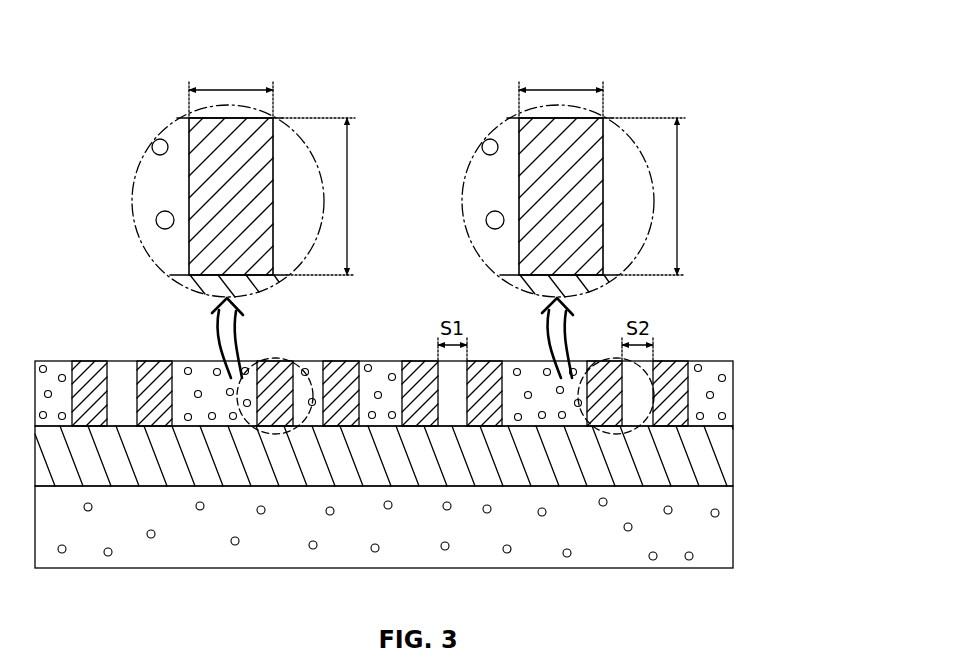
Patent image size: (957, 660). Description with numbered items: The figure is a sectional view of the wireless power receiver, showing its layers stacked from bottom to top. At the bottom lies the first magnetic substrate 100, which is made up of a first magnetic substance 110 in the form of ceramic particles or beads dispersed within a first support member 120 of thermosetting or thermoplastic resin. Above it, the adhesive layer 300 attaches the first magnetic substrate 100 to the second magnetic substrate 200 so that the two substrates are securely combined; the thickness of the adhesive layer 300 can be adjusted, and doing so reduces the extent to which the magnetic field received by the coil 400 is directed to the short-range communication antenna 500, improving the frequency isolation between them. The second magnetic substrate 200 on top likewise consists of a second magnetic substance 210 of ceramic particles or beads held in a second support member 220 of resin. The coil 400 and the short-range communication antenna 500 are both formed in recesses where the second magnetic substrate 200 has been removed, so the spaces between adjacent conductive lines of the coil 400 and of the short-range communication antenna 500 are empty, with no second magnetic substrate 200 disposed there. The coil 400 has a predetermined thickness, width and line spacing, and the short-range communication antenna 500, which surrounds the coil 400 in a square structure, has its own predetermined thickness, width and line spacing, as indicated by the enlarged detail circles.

The first magnetic substrate 100 is at (438, 527).
The first magnetic substance 110 is at (719, 513).
The first support member 120 is at (725, 550).
The second magnetic substrate 200 is at (440, 393).
The second magnetic substance 210 is at (726, 378).
The second support member 220 is at (733, 412).
The adhesive layer 300 is at (733, 452).
The coil 400 is at (278, 358).
The short-range communication antenna 500 is at (87, 358).